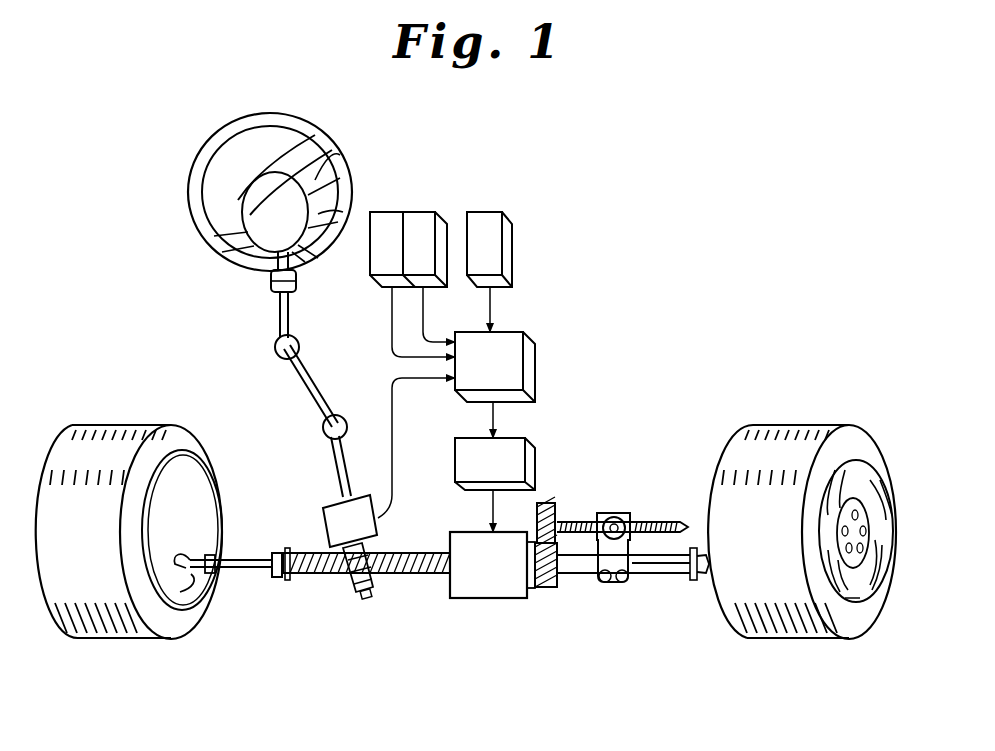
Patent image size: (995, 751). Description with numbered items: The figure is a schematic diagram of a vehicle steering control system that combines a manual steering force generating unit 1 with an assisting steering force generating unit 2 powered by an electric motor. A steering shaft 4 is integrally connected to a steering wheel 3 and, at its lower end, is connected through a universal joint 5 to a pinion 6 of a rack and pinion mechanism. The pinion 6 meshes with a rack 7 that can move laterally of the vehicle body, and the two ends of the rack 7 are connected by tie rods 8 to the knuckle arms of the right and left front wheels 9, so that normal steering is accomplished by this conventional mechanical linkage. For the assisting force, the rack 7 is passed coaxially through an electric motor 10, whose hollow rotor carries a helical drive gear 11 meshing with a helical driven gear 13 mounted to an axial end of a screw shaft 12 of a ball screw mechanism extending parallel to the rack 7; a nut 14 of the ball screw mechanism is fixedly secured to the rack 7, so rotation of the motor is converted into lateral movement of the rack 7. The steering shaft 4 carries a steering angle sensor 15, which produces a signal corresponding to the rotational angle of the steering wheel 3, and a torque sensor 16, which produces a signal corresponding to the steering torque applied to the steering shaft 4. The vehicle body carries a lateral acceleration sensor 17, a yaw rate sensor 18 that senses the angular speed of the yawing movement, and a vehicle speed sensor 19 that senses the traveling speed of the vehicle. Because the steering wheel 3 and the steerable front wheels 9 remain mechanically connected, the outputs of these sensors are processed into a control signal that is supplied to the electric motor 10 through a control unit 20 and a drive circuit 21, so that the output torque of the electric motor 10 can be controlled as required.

The manual steering force generating unit 1 is at (322, 545).
The assisting steering force generating unit 2 is at (623, 506).
The steering wheel 3 is at (190, 196).
The steering shaft 4 is at (295, 312).
The universal joint 5 is at (315, 393).
The pinion 6 is at (357, 592).
The rack 7 is at (405, 575).
The tie rod 8 is at (246, 568).
The front wheel 9 is at (120, 425).
The electric motor 10 is at (490, 598).
The helical drive gear 11 is at (548, 590).
The screw shaft 12 is at (668, 522).
The helical driven gear 13 is at (557, 500).
The nut 14 is at (600, 510).
The steering angle sensor 15 is at (272, 285).
The torque sensor 16 is at (378, 520).
The lateral acceleration sensor 17 is at (385, 212).
The yaw rate sensor 18 is at (426, 212).
The vehicle speed sensor 19 is at (512, 250).
The control unit 20 is at (504, 374).
The drive circuit 21 is at (530, 462).